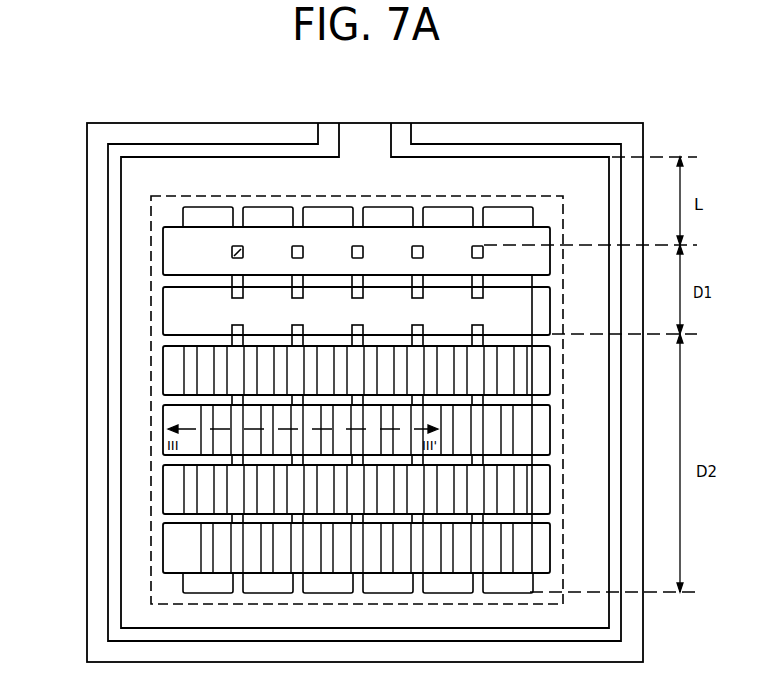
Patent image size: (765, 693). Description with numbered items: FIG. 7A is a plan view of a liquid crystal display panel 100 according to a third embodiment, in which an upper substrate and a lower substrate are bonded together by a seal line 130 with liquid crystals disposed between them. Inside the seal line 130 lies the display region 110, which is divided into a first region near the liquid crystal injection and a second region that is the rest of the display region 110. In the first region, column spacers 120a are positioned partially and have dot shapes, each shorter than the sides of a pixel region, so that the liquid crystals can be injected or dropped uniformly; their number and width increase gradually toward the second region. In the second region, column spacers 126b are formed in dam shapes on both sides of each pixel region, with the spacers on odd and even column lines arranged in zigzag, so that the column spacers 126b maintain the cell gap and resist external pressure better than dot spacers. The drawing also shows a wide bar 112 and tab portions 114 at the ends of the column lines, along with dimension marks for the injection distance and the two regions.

The liquid crystal display panel 100 is at (583, 123).
The display region 110 is at (177, 196).
The first electrode bar 112 is at (163, 253).
The electrode finger tab 114 is at (505, 207).
The column spacer 120a is at (240, 250).
The column spacer 126b is at (203, 420).
The seal line 130 is at (273, 144).